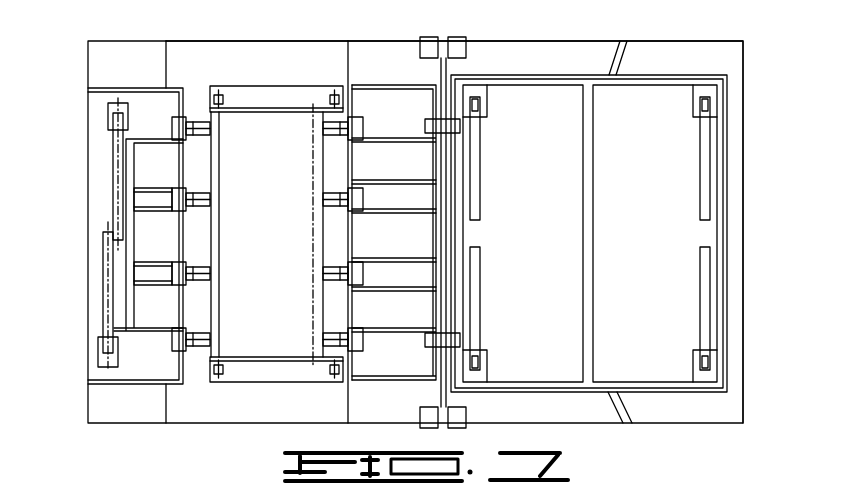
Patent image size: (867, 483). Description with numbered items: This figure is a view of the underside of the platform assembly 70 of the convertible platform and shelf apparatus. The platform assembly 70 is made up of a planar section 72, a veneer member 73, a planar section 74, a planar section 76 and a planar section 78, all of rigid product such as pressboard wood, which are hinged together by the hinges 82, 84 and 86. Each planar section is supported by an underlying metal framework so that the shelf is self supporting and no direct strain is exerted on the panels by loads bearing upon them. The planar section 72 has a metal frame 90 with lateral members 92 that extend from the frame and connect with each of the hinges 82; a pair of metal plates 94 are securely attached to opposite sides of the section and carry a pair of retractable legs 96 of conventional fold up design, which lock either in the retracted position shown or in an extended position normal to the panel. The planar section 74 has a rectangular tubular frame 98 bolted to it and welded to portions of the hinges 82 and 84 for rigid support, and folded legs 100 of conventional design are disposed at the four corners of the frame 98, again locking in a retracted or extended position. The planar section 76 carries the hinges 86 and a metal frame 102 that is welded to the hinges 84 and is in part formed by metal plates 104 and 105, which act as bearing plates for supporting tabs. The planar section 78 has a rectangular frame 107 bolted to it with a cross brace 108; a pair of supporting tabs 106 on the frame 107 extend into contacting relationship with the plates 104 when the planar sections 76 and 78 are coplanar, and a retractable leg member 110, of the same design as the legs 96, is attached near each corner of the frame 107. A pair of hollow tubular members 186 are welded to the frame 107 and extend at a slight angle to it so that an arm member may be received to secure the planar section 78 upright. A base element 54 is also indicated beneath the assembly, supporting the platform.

The base 54 is at (205, 482).
The platform assembly 70 is at (735, 92).
The planar section 72 is at (96, 40).
The veneer member 73 is at (124, 42).
The planar section 74 is at (248, 44).
The planar section 76 is at (386, 44).
The planar section 78 is at (551, 50).
The hinges 82 is at (194, 129).
The hinges 84 is at (345, 126).
The hinges 86 is at (456, 40).
The metal frame 90 is at (130, 204).
The lateral members 92 is at (172, 172).
The metal plates 94 is at (102, 103).
The retractable legs 96 is at (118, 160).
The rectangular tubular frame 98 is at (282, 75).
The folded legs 100 is at (232, 72).
The metal frame 102 is at (405, 86).
The metal plates 104 is at (398, 118).
The metal plate 105 is at (382, 202).
The supporting tabs 106 is at (437, 127).
The rectangular frame 107 is at (667, 80).
The cross brace 108 is at (453, 240).
The retractable leg member 110 is at (474, 160).
The hollow tubular members 186 is at (619, 56).